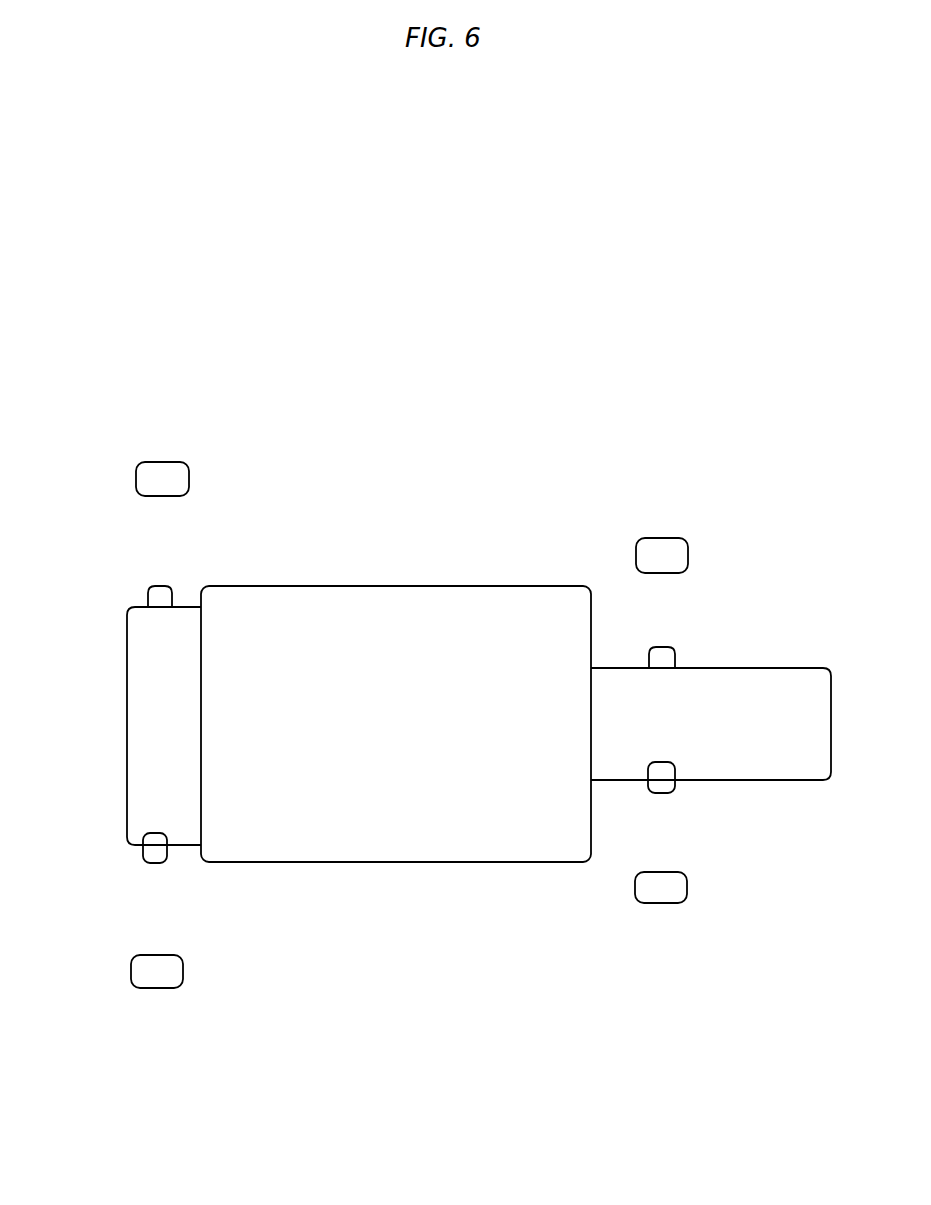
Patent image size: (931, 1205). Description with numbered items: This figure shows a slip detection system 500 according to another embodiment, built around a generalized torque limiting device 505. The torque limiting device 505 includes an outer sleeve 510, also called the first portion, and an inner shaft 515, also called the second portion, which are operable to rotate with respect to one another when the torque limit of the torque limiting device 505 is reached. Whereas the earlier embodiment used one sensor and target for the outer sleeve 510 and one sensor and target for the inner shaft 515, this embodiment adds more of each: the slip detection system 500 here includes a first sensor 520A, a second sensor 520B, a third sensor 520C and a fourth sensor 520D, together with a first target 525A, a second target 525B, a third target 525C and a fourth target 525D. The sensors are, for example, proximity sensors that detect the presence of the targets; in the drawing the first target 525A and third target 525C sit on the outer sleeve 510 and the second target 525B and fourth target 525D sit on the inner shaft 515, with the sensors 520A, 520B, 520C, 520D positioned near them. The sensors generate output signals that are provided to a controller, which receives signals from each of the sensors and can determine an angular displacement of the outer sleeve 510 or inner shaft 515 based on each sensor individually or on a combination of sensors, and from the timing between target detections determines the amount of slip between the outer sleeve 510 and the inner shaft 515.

The slip detection system 500 is at (595, 310).
The torque limiting device 505 is at (401, 586).
The outer sleeve 510 is at (127, 725).
The inner shaft 515 is at (753, 668).
The first sensor 520A is at (160, 462).
The second sensor 520B is at (688, 552).
The third sensor 520C is at (153, 988).
The fourth sensor 520D is at (688, 888).
The first target 525A is at (154, 586).
The second target 525B is at (661, 647).
The third target 525C is at (152, 865).
The fourth target 525D is at (660, 793).